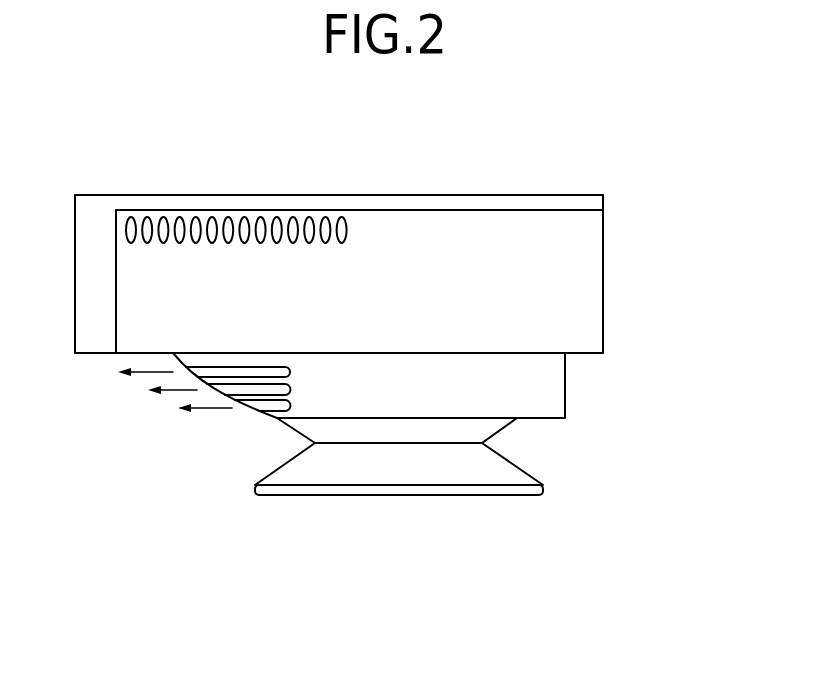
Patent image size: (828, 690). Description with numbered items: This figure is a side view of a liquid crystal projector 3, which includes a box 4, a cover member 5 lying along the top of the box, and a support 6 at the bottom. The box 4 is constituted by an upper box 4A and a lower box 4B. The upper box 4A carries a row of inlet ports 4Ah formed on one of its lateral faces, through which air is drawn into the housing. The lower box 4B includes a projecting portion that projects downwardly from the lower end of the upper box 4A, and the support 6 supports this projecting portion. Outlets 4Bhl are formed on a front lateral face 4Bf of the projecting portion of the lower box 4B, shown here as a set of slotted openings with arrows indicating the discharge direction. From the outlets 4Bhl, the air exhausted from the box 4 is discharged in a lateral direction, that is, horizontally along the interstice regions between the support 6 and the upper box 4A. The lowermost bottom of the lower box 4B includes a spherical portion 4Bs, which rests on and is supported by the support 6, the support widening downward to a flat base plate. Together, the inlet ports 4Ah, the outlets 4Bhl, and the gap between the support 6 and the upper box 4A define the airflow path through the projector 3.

The liquid crystal projector 3 is at (680, 543).
The box 4 is at (676, 297).
The upper box 4A is at (595, 317).
The inlet ports 4Ah is at (262, 221).
The lower box 4B is at (553, 390).
The front lateral face 4Bf is at (258, 412).
The outlets 4Bhl is at (240, 405).
The spherical portion 4Bs is at (497, 426).
The cover member 5 is at (407, 195).
The support 6 is at (413, 470).